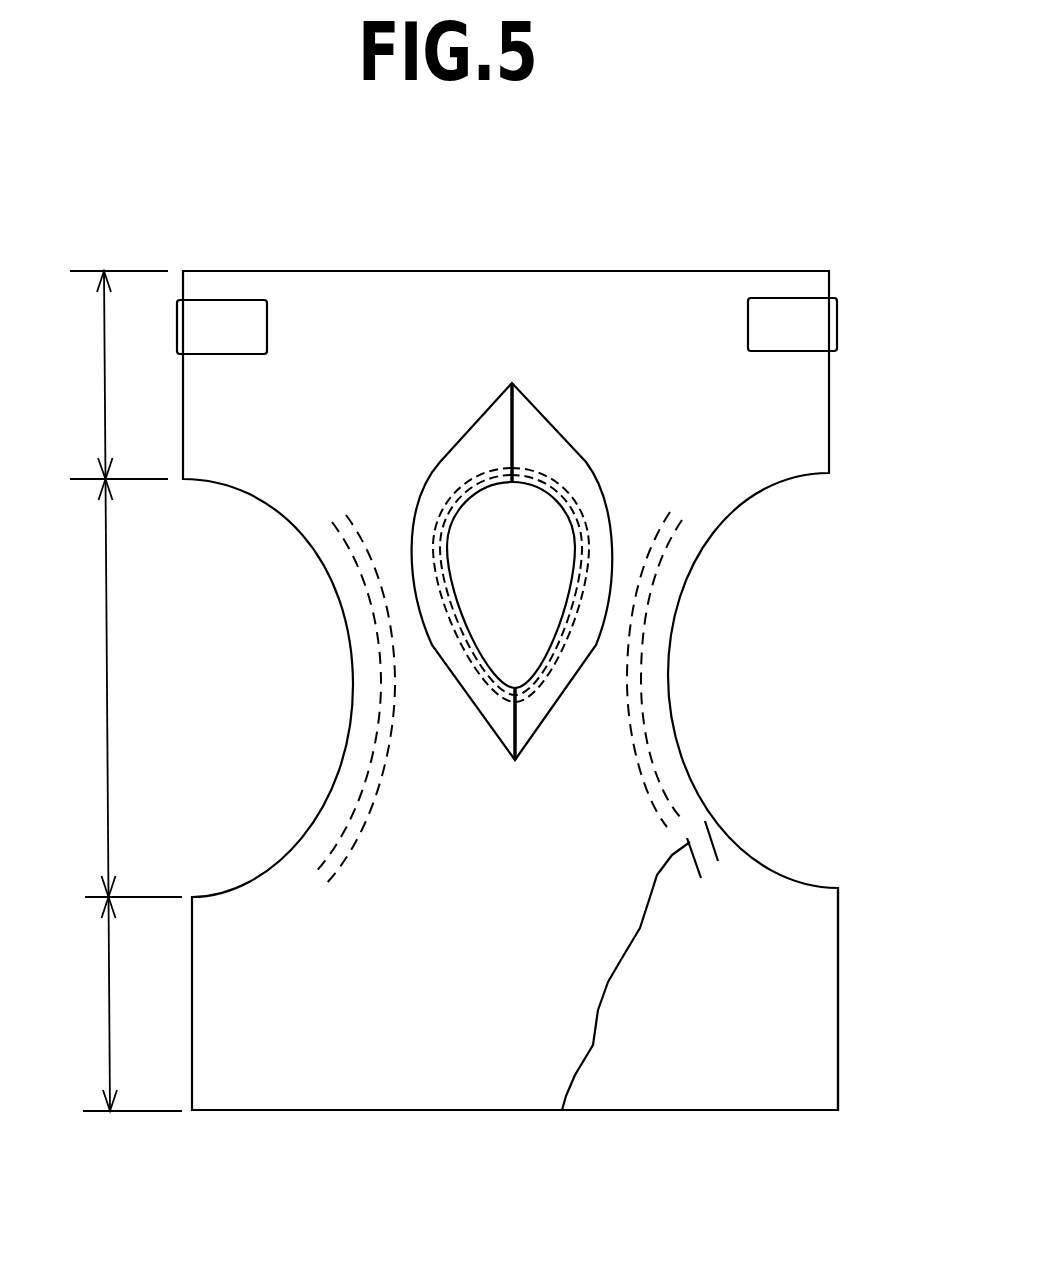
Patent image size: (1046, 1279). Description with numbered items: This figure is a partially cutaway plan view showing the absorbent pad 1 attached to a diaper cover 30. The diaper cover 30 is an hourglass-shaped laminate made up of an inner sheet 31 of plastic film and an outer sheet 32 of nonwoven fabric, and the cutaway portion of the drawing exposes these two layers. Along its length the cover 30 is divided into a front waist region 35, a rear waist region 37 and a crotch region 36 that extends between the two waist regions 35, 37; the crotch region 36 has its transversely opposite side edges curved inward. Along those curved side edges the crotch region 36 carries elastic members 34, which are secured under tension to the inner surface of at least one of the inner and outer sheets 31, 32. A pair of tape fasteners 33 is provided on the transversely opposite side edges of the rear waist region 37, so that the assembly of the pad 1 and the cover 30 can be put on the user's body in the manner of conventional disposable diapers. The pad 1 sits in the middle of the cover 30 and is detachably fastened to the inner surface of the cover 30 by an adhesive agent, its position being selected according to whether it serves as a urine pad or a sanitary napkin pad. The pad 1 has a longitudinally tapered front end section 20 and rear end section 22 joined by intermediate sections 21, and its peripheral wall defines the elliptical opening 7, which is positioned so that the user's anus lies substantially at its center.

The absorbent pad 1 is at (516, 580).
The elliptical opening 7 is at (497, 660).
The front end section 20 is at (545, 431).
The intermediate sections 21 is at (597, 567).
The rear end section 22 is at (550, 703).
The diaper cover 30 is at (652, 268).
The inner sheet 31 is at (580, 1010).
The outer sheet 32 is at (823, 967).
The tape fasteners 33 is at (812, 323).
The elastic members 34 is at (698, 850).
The front waist region 35 is at (110, 1043).
The crotch region 36 is at (106, 727).
The rear waist region 37 is at (104, 411).